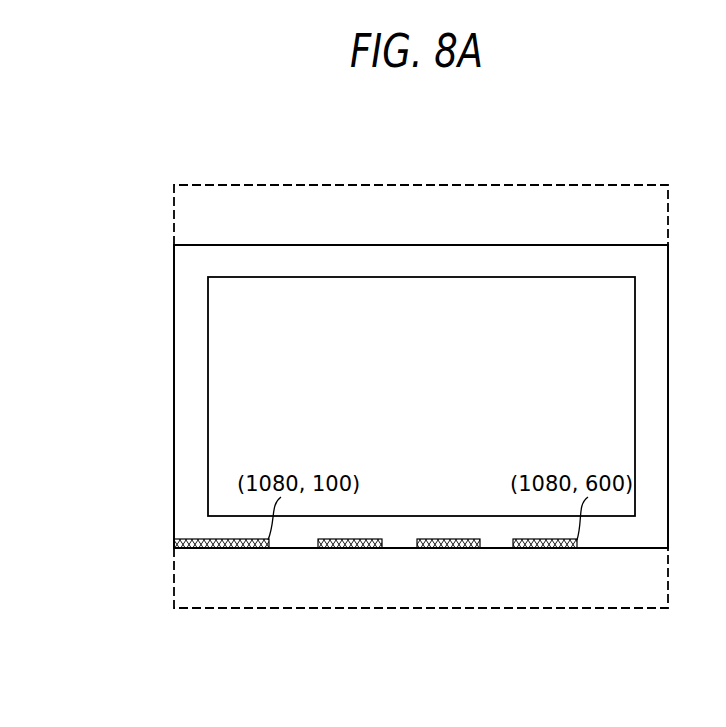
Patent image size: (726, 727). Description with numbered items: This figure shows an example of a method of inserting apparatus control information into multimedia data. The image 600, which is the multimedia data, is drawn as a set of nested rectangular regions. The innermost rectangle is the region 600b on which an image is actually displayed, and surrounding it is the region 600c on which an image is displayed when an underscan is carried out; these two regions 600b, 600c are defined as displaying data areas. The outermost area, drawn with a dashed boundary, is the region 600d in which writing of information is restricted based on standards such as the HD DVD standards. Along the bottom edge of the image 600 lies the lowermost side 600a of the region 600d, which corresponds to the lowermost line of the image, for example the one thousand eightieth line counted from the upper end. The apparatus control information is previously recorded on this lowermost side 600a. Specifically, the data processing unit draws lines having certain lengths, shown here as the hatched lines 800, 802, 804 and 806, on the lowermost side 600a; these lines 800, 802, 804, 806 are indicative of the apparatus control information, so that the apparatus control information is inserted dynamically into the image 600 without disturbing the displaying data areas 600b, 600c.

The image 600 is at (495, 245).
The lowermost side 600a is at (655, 548).
The region on which an image is actually displayed 600b is at (223, 339).
The region on which an image is displayed when an underscan is carried out 600c is at (182, 264).
The region in which write of information is restricted 600d is at (182, 216).
The line 800 is at (237, 548).
The line 802 is at (353, 548).
The line 804 is at (447, 548).
The line 806 is at (545, 548).